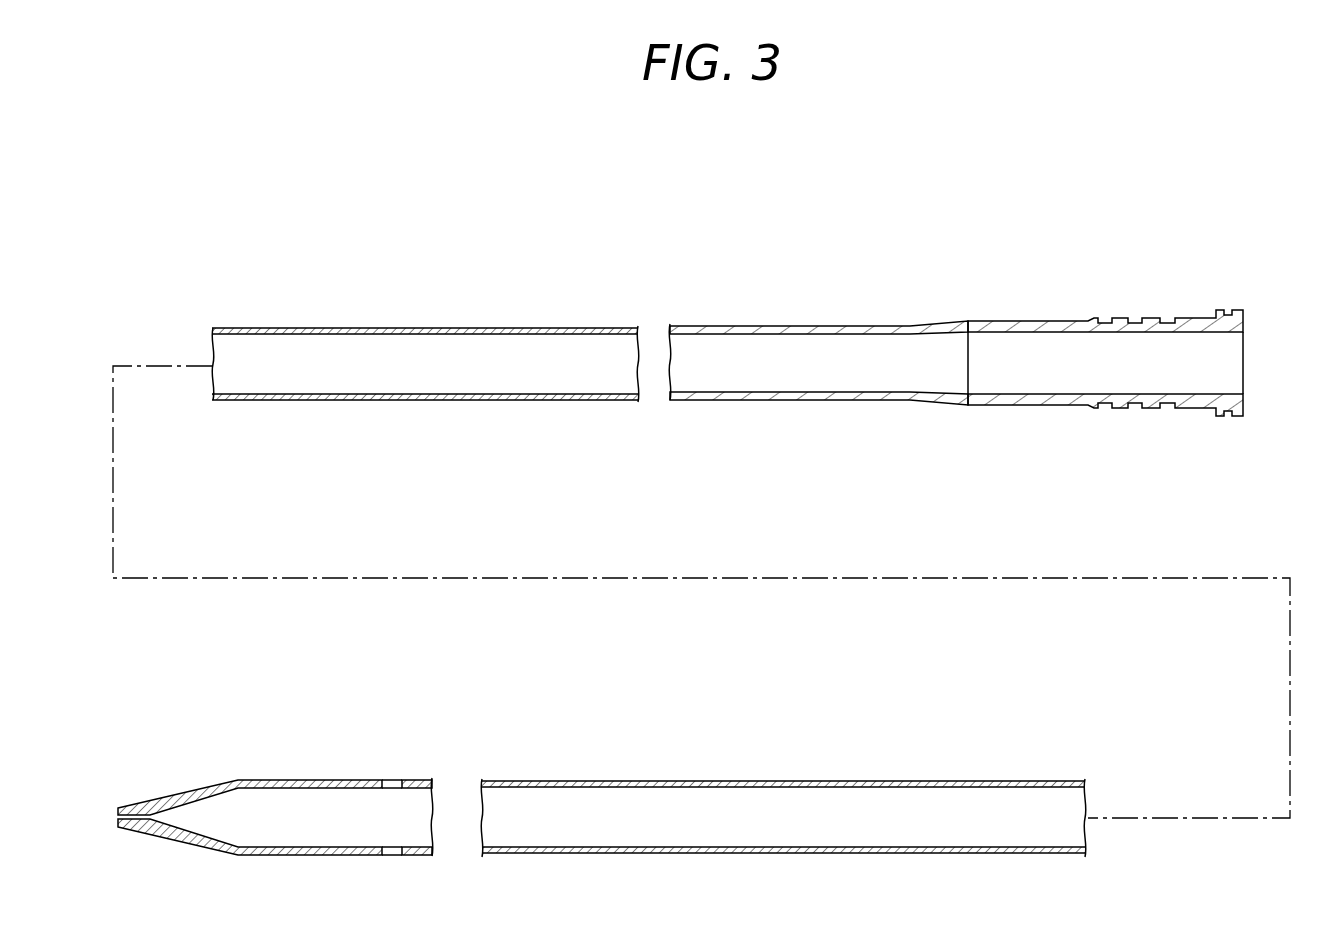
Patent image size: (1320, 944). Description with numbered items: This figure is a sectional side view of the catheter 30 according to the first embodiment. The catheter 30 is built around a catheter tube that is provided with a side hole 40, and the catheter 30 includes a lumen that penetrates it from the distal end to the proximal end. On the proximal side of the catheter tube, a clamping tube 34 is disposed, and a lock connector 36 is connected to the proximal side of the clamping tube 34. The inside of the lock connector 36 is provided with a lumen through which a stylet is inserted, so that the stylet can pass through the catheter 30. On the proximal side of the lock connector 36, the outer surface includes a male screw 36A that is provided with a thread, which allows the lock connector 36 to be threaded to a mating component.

The catheter 30 is at (732, 364).
The clamping tube 34 is at (798, 326).
The lock connector 36 is at (1163, 320).
The male screw 36A is at (1232, 418).
The side hole 40 is at (383, 848).